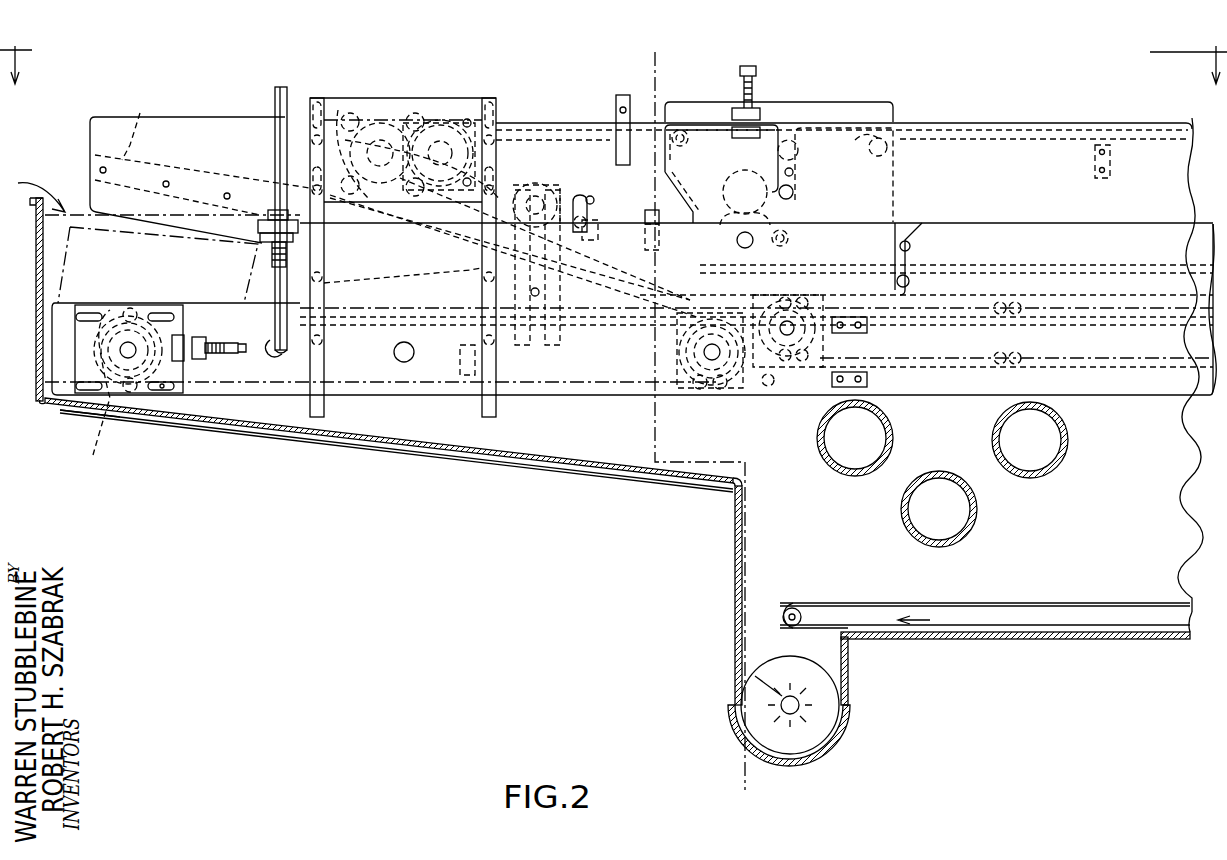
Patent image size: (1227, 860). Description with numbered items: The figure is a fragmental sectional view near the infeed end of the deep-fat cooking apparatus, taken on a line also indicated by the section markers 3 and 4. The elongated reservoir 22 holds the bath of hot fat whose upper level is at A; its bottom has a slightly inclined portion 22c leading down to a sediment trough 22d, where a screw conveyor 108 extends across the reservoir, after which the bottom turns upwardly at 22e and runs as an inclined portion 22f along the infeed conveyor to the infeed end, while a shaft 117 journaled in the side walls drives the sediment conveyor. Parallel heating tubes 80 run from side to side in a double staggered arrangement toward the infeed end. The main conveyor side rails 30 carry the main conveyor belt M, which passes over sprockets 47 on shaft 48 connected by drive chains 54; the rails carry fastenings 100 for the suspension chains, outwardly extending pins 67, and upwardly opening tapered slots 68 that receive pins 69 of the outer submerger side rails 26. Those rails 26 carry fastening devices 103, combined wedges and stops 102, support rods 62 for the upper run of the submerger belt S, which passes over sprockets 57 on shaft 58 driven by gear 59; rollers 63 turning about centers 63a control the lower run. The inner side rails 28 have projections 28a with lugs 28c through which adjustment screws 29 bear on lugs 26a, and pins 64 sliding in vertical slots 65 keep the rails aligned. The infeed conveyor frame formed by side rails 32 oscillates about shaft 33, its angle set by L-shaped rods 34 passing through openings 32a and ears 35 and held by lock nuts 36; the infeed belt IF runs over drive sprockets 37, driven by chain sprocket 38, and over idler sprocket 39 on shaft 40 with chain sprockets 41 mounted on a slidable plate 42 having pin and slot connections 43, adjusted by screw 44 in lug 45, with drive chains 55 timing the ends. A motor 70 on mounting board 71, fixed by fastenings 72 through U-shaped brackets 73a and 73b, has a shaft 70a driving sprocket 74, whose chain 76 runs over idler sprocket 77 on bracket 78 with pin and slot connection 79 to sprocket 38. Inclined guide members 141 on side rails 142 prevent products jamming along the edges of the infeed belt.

The reservoir 22 is at (50, 232).
The inclined bottom portion 22c is at (1021, 637).
The sediment trough 22d is at (851, 725).
The upturned bottom portion 22e is at (744, 505).
The inclined bottom portion 22f is at (445, 455).
The outer side rails 26 is at (210, 100).
The lugs 26a is at (712, 135).
The inner side rails 28 is at (915, 222).
The vertically upstanding projection 28a is at (846, 110).
The lugs 28c is at (760, 115).
The adjustment screws 29 is at (751, 84).
The side rails 30 is at (1108, 232).
The side rails 32 is at (146, 242).
The opening 32a is at (274, 353).
The shaft 33 is at (680, 405).
The L-shaped adjustment rods 34 is at (277, 94).
The ear 35 is at (258, 226).
The lock nuts 36 is at (273, 220).
The drive sprockets 37 is at (716, 395).
The chain sprocket 38 is at (675, 360).
The belt idler sprocket 39 is at (84, 414).
The shaft 40 is at (130, 355).
The chain sprockets 41 is at (95, 392).
The slidable plate 42 is at (195, 348).
The pin and slot connections 43 is at (170, 387).
The screw 44 is at (238, 345).
The lug 45 is at (196, 355).
The belt sprockets 47 is at (748, 375).
The shaft 48 is at (838, 328).
The drive chains 54 is at (785, 378).
The drive chains 55 is at (130, 318).
The belt drive sprockets 57 is at (455, 120).
The shaft 58 is at (468, 114).
The drive gear 59 is at (440, 120).
The support rods 62 is at (996, 138).
The rollers 63 is at (722, 195).
The centers 63a is at (757, 227).
The pins 64 is at (796, 151).
The vertical slots 65 is at (793, 170).
The pins 67 is at (413, 352).
The slots 68 is at (911, 244).
The pins 69 is at (911, 283).
The motor 70 is at (345, 105).
The driven shaft 70a is at (372, 141).
The mounting board 71 is at (360, 82).
The fastenings 72 is at (320, 278).
The U-shape support bracket 73a is at (318, 288).
The U-shape support bracket 73b is at (483, 290).
The chain drive sprocket 74 is at (410, 100).
The endless chain 76 is at (575, 211).
The idler sprocket 77 is at (535, 190).
The vertically adjustable bracket 78 is at (545, 345).
The pin and slot connection 79 is at (537, 301).
The tubes 80 is at (886, 440).
The fastenings 100 is at (592, 212).
The combined wedges and stops 102 is at (638, 215).
The fastening devices 103 is at (615, 144).
The screw conveyor 108 is at (816, 696).
The shaft 117 is at (790, 616).
The inclined guide member 141 is at (126, 126).
The side rail 142 is at (98, 168).
The section line 3 is at (613, 78).
The section line 4 is at (752, 784).
The upper level of hot fat A is at (150, 194).
The submerger belt S is at (557, 123).
The main conveyor belt M is at (1125, 358).
The infeed conveyor belt IF is at (410, 384).